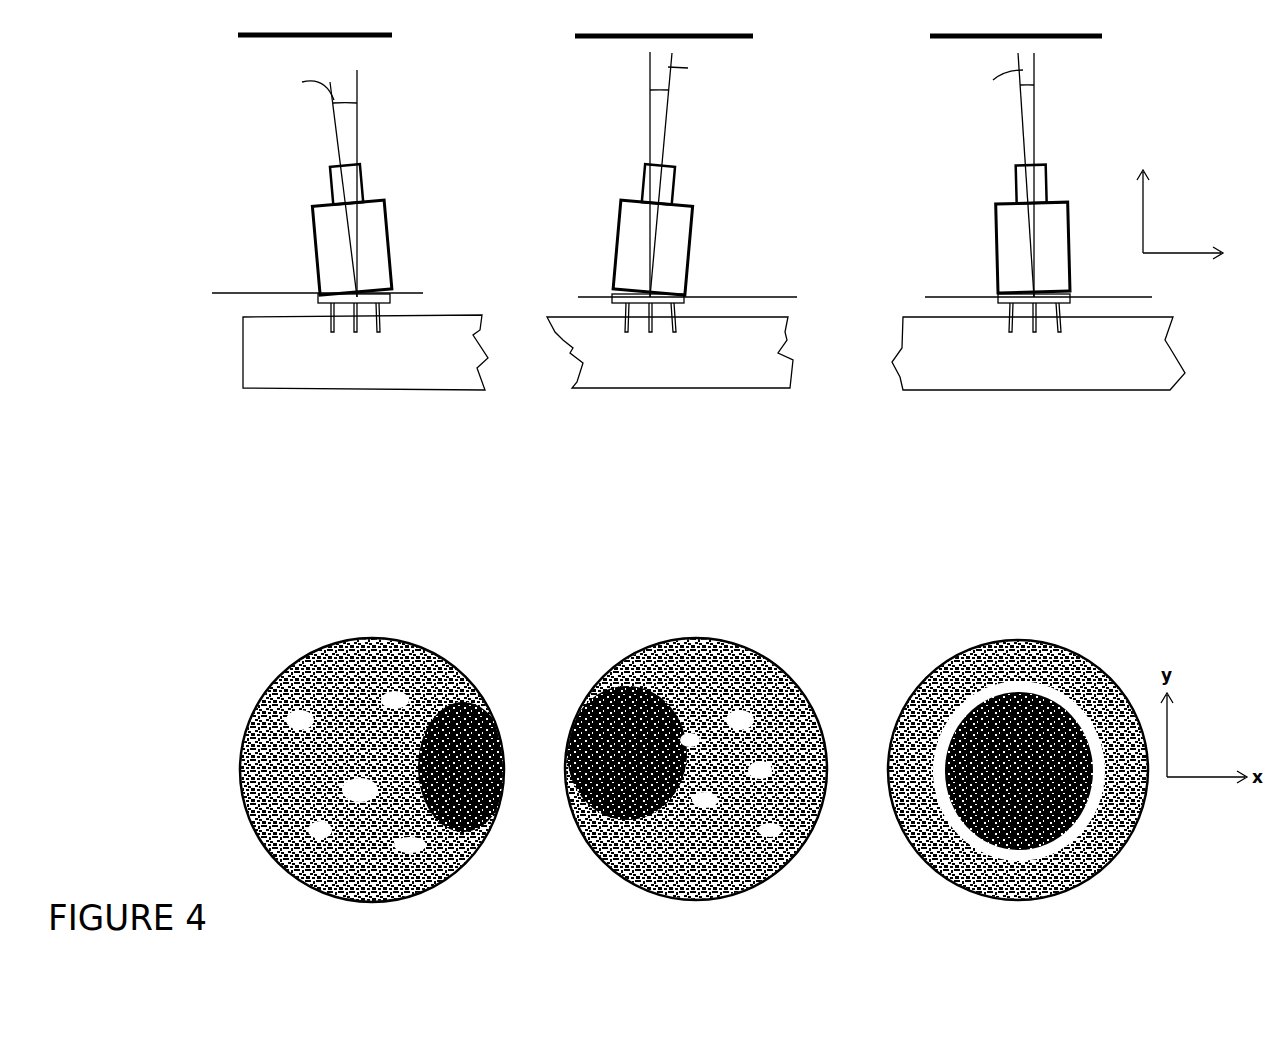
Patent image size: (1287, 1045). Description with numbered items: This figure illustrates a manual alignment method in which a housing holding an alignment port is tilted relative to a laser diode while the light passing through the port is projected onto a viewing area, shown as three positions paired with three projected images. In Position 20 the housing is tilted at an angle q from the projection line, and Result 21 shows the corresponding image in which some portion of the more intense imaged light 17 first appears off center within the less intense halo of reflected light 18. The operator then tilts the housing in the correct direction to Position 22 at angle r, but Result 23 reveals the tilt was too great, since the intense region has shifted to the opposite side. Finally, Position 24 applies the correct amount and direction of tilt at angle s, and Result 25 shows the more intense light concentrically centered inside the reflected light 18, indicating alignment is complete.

The imaged light 17 is at (977, 717).
The reflected light 18 is at (442, 887).
The Position 20 is at (382, 232).
The Position 22 is at (672, 233).
The Position 24 is at (1066, 232).
The Result 21 is at (374, 746).
The Result 23 is at (696, 746).
The Result 25 is at (1018, 744).